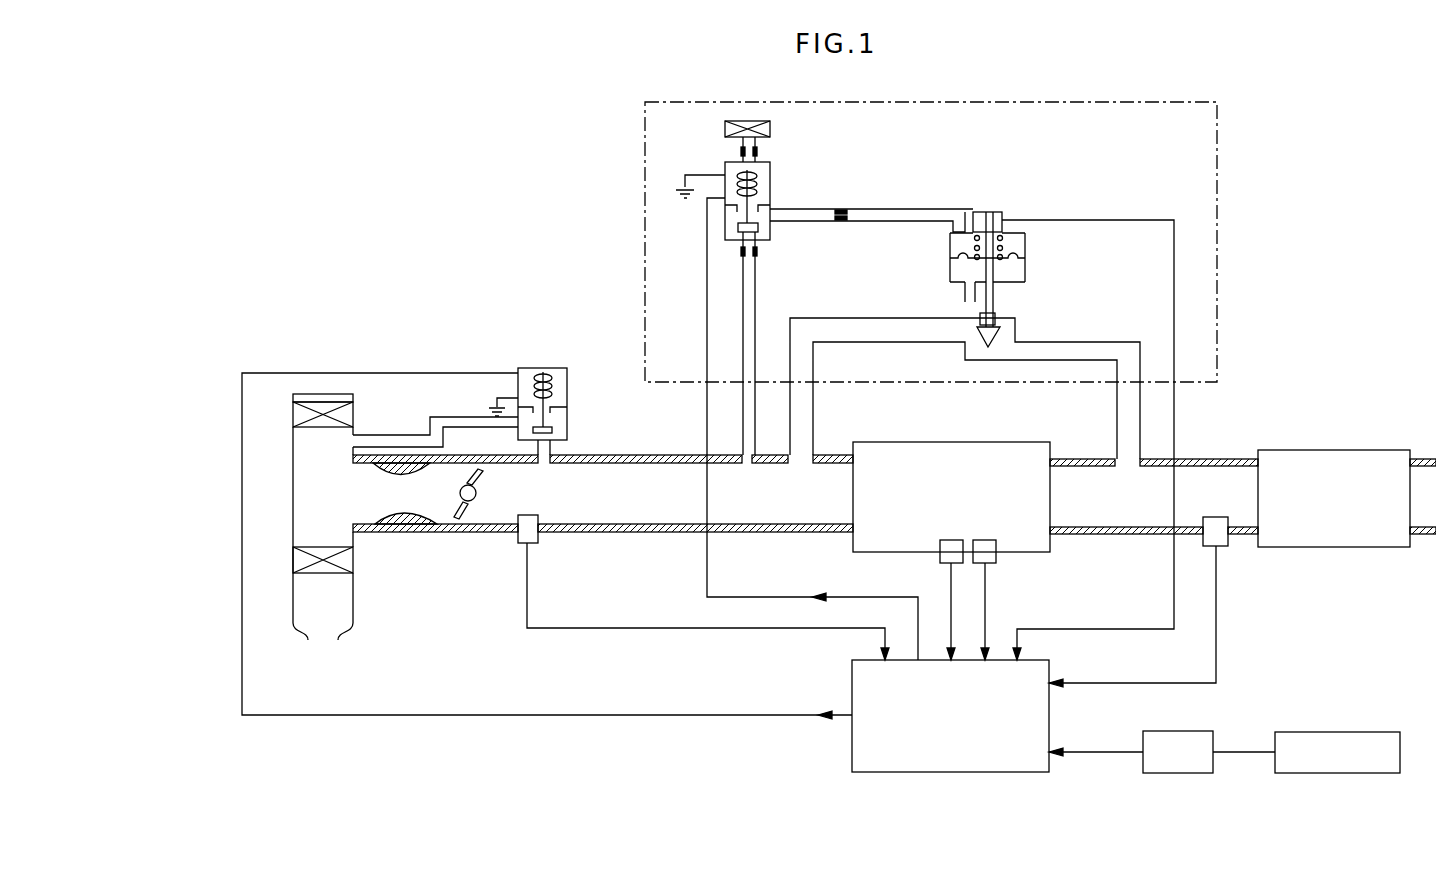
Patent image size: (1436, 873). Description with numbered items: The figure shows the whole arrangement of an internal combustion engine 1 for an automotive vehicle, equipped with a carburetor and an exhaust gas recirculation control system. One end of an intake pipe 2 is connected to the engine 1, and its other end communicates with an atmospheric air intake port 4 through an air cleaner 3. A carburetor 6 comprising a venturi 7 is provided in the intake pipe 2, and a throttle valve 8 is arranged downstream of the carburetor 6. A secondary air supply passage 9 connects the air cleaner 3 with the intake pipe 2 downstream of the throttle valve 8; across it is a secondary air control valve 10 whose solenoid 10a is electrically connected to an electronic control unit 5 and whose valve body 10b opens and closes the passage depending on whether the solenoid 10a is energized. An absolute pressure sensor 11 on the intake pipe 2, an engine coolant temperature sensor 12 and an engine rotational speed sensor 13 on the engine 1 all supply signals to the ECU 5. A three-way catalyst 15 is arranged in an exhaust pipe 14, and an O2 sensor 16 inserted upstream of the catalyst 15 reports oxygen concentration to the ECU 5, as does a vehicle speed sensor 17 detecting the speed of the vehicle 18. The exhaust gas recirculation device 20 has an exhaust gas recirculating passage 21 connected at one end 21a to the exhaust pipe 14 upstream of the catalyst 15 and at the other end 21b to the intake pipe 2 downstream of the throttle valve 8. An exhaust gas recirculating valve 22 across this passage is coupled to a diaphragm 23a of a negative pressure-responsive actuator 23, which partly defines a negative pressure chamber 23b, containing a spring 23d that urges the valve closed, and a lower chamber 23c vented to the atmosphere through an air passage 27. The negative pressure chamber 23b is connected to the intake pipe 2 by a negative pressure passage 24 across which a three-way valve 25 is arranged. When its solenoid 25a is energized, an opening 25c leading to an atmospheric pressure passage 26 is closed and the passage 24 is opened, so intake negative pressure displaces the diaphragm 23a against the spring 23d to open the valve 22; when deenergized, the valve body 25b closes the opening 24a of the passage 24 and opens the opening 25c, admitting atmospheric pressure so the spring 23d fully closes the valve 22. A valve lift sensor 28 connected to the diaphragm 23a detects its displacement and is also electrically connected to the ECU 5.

The internal combustion engine 1 is at (950, 442).
The intake pipe 2 is at (660, 504).
The air cleaner 3 is at (295, 412).
The atmospheric air intake port 4 is at (310, 632).
The electronic control unit 5 is at (1049, 662).
The carburetor 6 is at (389, 528).
The venturi 7 is at (395, 515).
The throttle valve 8 is at (462, 522).
The secondary air supply passage 9 is at (393, 435).
The secondary air control valve 10 is at (557, 380).
The solenoid 10a is at (543, 378).
The valve body 10b is at (552, 428).
The absolute pressure sensor 11 is at (516, 543).
The engine coolant temperature sensor 12 is at (940, 555).
The engine rotational speed sensor 13 is at (996, 558).
The exhaust pipe 14 is at (1148, 504).
The three-way catalyst 15 is at (1360, 450).
The O2 sensor 16 is at (1228, 547).
The vehicle speed sensor 17 is at (1195, 731).
The vehicle 18 is at (1362, 732).
The exhaust gas recirculation device 20 is at (1220, 216).
The exhaust gas recirculating passage 21 is at (858, 318).
The one end of exhaust gas recirculating passage 21a is at (1127, 465).
The other end of exhaust gas recirculating passage 21b is at (793, 468).
The exhaust gas recirculating valve 22 is at (1001, 333).
The negative pressure-responsive actuator 23 is at (998, 250).
The diaphragm 23a is at (1022, 250).
The negative pressure chamber 23b is at (955, 245).
The lower chamber 23c is at (1025, 275).
The spring 23d is at (1001, 235).
The negative pressure passage 24 is at (880, 209).
The opening of negative pressure passage 24a is at (756, 240).
The three-way valve 25 is at (748, 183).
The solenoid 25a is at (745, 183).
The valve body 25b is at (760, 228).
The opening 25c is at (740, 220).
The atmospheric pressure passage 26 is at (770, 128).
The air passage 27 is at (965, 295).
The valve lift sensor 28 is at (980, 212).